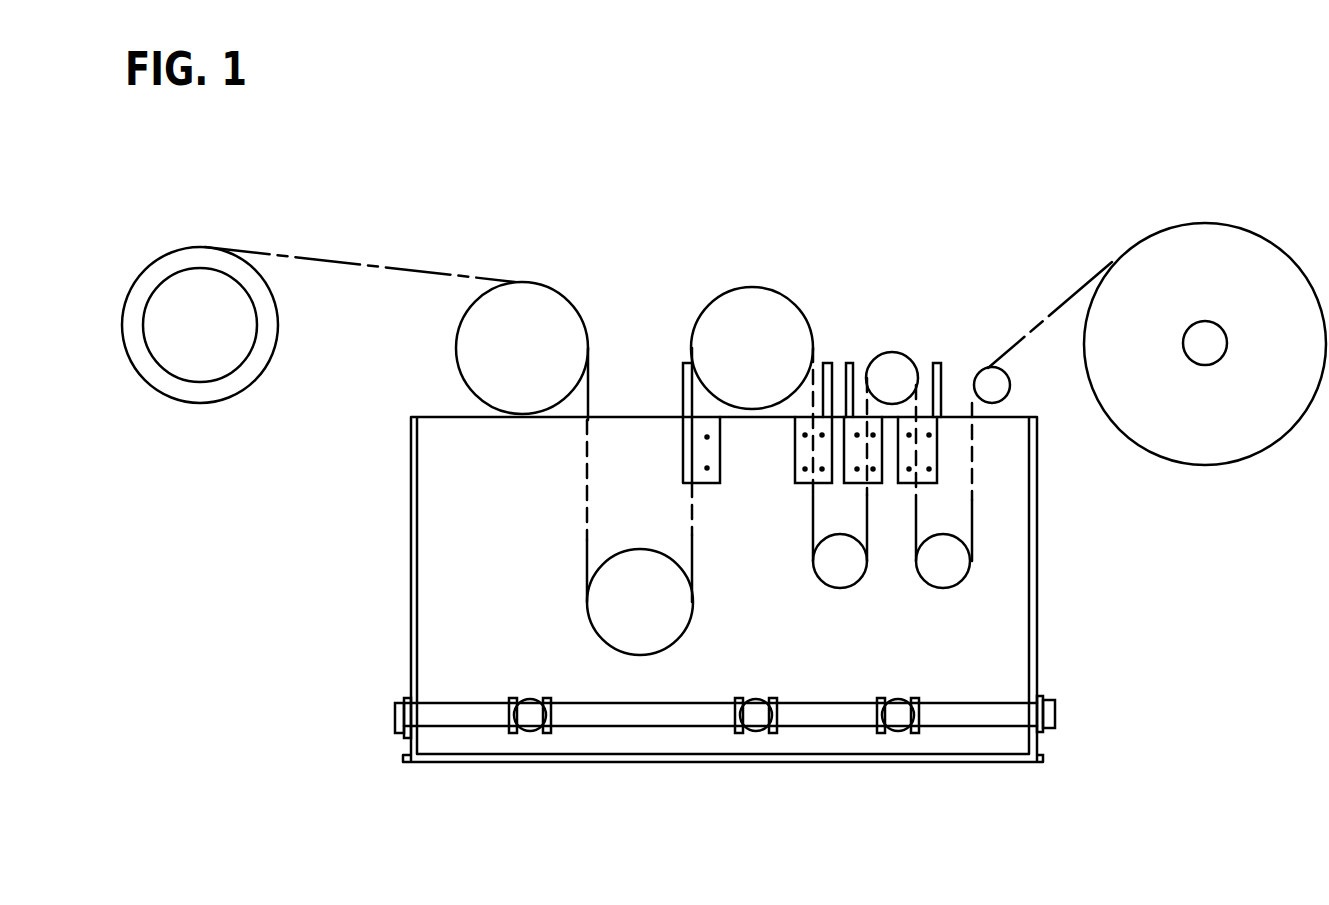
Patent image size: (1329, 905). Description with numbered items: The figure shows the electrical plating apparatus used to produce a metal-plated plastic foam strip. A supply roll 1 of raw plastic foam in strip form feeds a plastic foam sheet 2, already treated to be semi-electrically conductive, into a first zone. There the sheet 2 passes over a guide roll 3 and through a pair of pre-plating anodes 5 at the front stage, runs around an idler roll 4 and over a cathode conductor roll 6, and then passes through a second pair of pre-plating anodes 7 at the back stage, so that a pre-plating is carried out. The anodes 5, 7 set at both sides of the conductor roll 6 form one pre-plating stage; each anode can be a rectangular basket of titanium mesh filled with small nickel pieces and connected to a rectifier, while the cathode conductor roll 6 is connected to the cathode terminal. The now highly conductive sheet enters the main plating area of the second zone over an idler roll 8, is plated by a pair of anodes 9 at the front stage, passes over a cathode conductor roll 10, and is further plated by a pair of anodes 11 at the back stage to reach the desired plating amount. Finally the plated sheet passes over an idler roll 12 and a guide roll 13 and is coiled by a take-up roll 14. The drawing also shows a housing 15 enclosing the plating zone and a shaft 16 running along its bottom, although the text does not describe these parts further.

The supply roll 1 is at (1225, 420).
The plastic foam sheet 2 is at (1023, 333).
The guide roll 3 is at (986, 378).
The idler roll 4 is at (943, 562).
The pre-plating anodes 5 is at (927, 470).
The cathode conductor roll 6 is at (885, 368).
The pre-plating anodes 7 is at (877, 483).
The idler roll 8 is at (838, 568).
The anodes 9 is at (795, 446).
The cathode conductor roll 10 is at (718, 321).
The anodes 11 is at (683, 468).
The idler roll 12 is at (625, 632).
The guide roll 13 is at (532, 307).
The take-up roll 14 is at (208, 354).
The housing 15 is at (410, 598).
The drive shaft 16 is at (1056, 707).